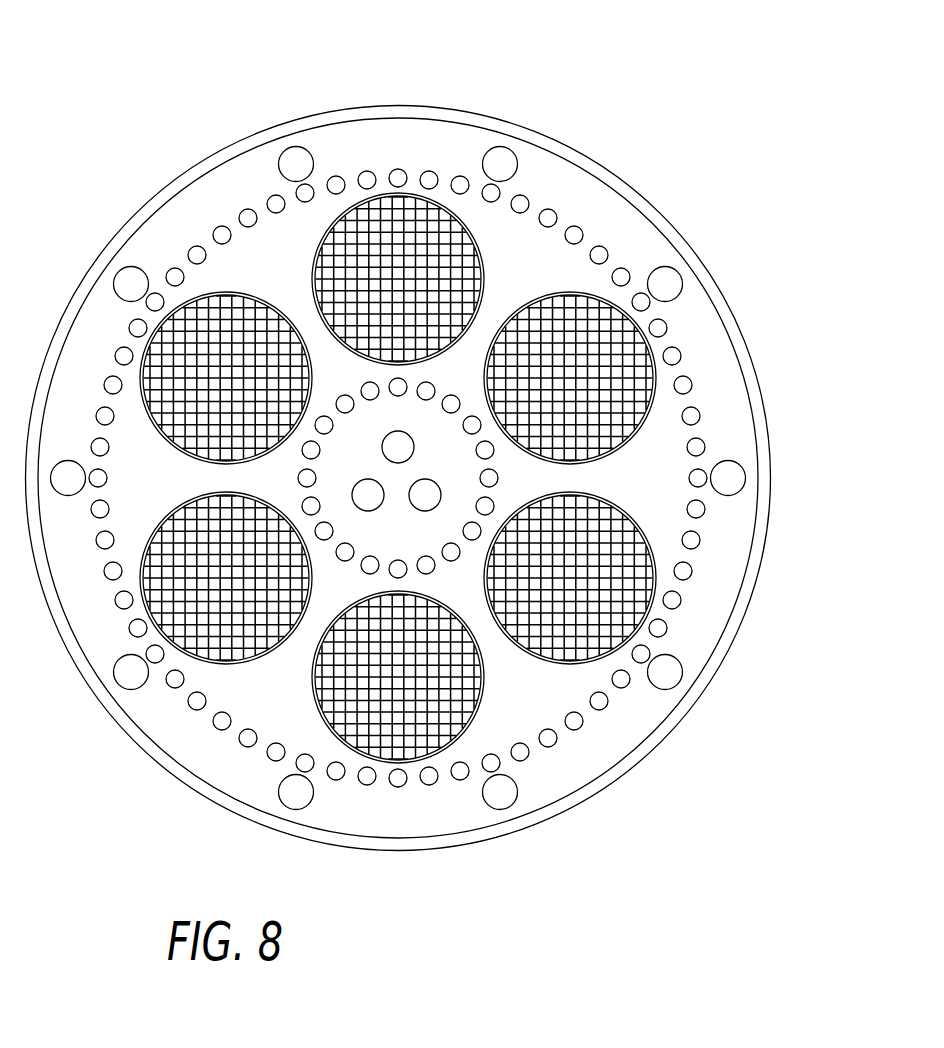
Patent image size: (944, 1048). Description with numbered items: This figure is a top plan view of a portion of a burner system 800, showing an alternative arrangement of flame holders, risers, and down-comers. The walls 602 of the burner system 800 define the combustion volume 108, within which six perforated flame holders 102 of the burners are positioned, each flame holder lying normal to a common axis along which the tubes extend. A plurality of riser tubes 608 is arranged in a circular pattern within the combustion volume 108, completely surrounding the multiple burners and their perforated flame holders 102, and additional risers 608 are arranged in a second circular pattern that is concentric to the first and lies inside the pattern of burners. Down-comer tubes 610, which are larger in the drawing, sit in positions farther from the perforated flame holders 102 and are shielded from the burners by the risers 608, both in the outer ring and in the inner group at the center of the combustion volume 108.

The burner system 800 is at (676, 60).
The walls 602 is at (92, 690).
The combustion volume 108 is at (540, 708).
The perforated flame holder 102 is at (205, 295).
The riser tubes 608 is at (541, 209).
The down-comer tubes 610 is at (279, 170).